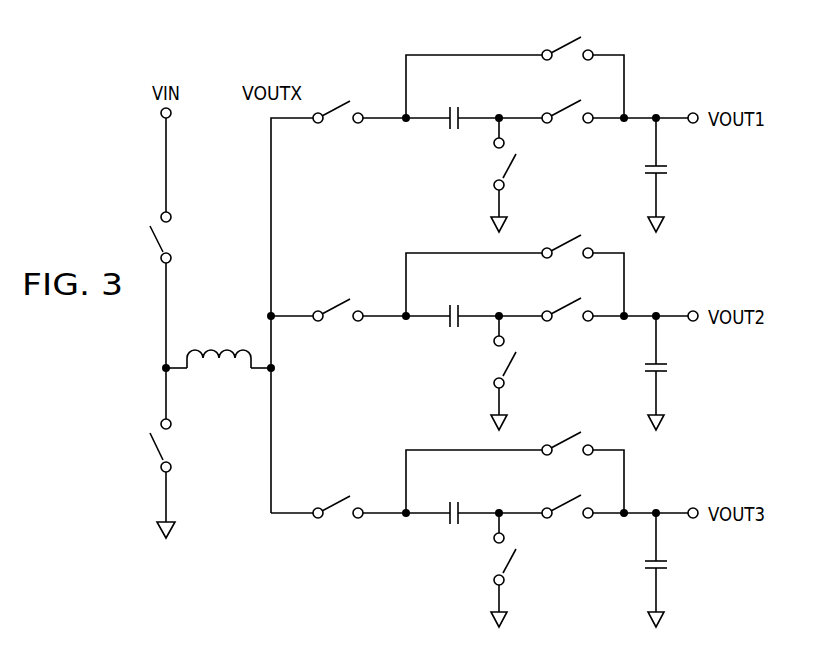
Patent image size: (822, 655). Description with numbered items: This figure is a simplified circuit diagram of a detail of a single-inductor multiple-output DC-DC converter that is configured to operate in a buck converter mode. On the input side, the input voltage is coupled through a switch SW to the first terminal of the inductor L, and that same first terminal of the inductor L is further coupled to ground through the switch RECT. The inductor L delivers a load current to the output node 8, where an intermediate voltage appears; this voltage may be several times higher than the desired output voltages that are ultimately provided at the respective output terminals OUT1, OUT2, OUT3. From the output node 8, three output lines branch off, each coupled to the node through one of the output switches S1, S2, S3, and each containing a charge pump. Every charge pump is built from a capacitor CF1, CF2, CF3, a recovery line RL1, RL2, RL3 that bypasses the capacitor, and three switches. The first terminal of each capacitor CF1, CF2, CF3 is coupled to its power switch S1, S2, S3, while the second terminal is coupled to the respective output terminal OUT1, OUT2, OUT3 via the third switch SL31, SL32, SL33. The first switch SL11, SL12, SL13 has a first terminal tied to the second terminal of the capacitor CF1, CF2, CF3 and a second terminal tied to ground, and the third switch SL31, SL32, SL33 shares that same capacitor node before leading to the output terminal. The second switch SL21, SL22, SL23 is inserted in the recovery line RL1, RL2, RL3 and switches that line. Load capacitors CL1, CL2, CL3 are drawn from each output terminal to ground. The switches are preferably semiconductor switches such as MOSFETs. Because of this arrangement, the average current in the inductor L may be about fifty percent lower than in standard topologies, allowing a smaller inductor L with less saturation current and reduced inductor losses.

The output node 8 is at (268, 371).
The switch SW is at (180, 237).
The switch RECT is at (190, 445).
The inductor L is at (218, 343).
The output switch S1 is at (338, 102).
The output switch S2 is at (338, 300).
The output switch S3 is at (338, 497).
The recovery line RL1 is at (515, 73).
The recovery line RL2 is at (515, 271).
The recovery line RL3 is at (515, 468).
The first switch SL11 is at (524, 175).
The first switch SL12 is at (524, 373).
The first switch SL13 is at (524, 570).
The second switch SL21 is at (567, 36).
The second switch SL22 is at (567, 234).
The second switch SL23 is at (567, 431).
The third switch SL31 is at (567, 99).
The third switch SL32 is at (567, 297).
The third switch SL33 is at (567, 494).
The capacitor CF1 is at (452, 102).
The capacitor CF2 is at (452, 300).
The capacitor CF3 is at (452, 497).
The load capacitor CL1 is at (676, 175).
The load capacitor CL2 is at (676, 373).
The load capacitor CL3 is at (676, 570).
The output terminal OUT1 is at (730, 99).
The output terminal OUT2 is at (730, 297).
The output terminal OUT3 is at (730, 494).